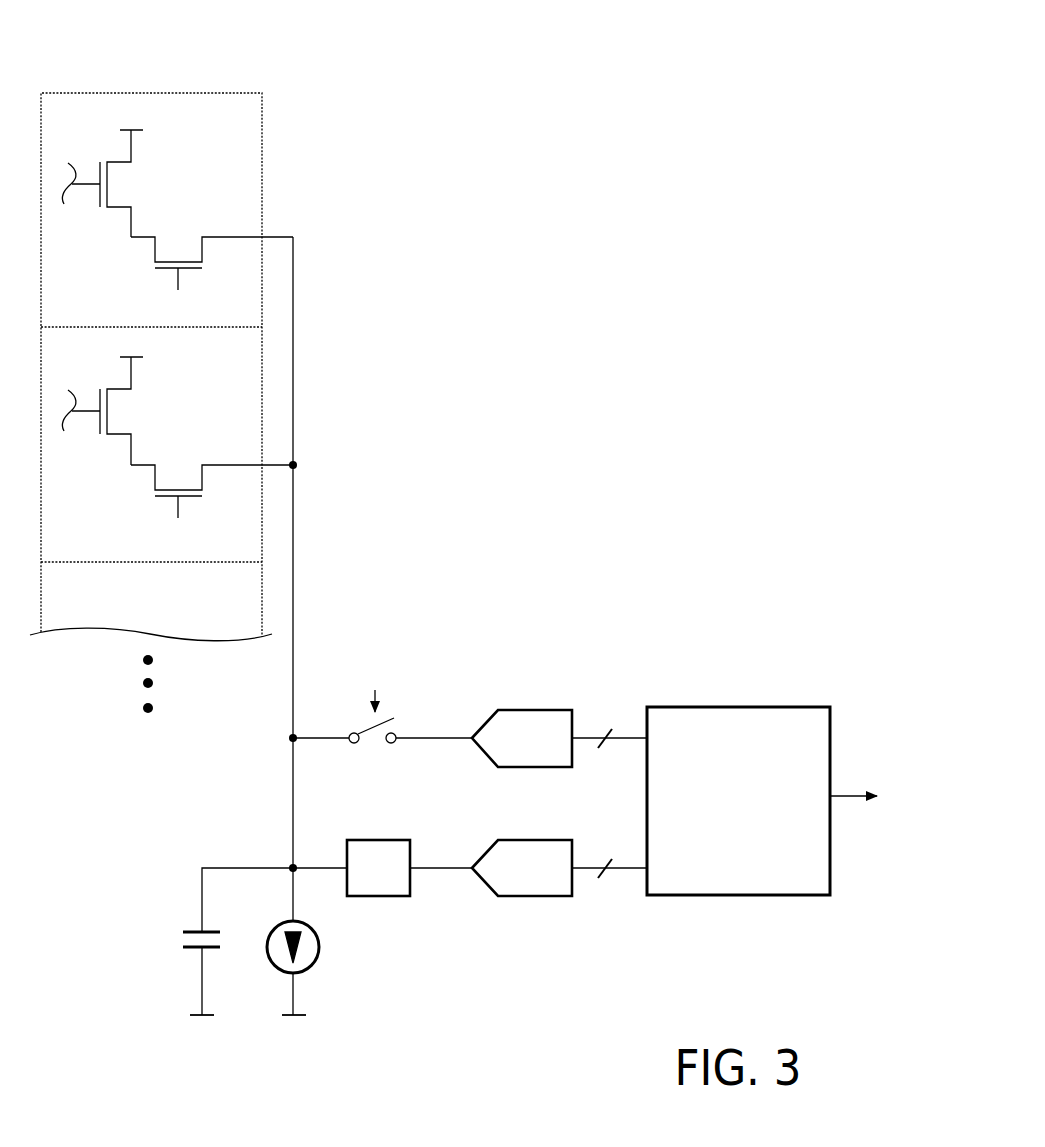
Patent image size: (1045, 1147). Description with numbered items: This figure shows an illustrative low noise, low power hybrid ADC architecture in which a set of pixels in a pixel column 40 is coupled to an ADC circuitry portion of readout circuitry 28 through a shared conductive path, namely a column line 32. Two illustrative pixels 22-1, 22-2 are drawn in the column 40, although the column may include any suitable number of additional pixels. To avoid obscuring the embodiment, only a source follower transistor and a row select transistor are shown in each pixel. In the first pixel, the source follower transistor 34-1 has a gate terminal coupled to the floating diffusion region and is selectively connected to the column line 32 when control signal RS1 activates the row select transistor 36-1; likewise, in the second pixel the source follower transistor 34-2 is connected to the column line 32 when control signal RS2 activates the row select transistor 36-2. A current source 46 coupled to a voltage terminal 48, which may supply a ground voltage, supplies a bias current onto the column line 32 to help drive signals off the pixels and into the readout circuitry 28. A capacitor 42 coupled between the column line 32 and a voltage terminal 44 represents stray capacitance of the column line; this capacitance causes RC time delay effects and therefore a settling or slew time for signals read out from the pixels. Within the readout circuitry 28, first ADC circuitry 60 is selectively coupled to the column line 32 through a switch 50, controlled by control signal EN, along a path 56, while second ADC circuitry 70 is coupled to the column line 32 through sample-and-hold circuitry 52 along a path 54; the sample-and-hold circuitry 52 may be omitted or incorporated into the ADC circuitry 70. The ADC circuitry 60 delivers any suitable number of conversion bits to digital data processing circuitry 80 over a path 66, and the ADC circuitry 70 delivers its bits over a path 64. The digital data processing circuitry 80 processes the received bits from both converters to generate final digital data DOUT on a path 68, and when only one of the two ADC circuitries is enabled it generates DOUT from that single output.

The pixel column 40 is at (186, 54).
The pixel 22-1 is at (262, 149).
The pixel 22-2 is at (262, 359).
The source follower transistor 34-1 is at (142, 184).
The source follower transistor 34-2 is at (142, 411).
The row select transistor 36-1 is at (179, 233).
The row select transistor 36-2 is at (179, 460).
The column line 32 is at (294, 270).
The readout circuitry 28 is at (646, 594).
The capacitor 42 is at (172, 941).
The voltage terminal 44 is at (206, 1027).
The current source 46 is at (330, 947).
The voltage terminal 48 is at (296, 1027).
The switch 50 is at (369, 752).
The sample-and-hold circuitry 52 is at (380, 905).
The path 54 is at (432, 865).
The path 56 is at (429, 736).
The first ADC circuitry 60 is at (522, 700).
The path 64 is at (585, 865).
The path 66 is at (590, 735).
The second ADC circuitry 70 is at (522, 833).
The digital data processing circuitry 80 is at (773, 706).
The path 68 is at (846, 795).